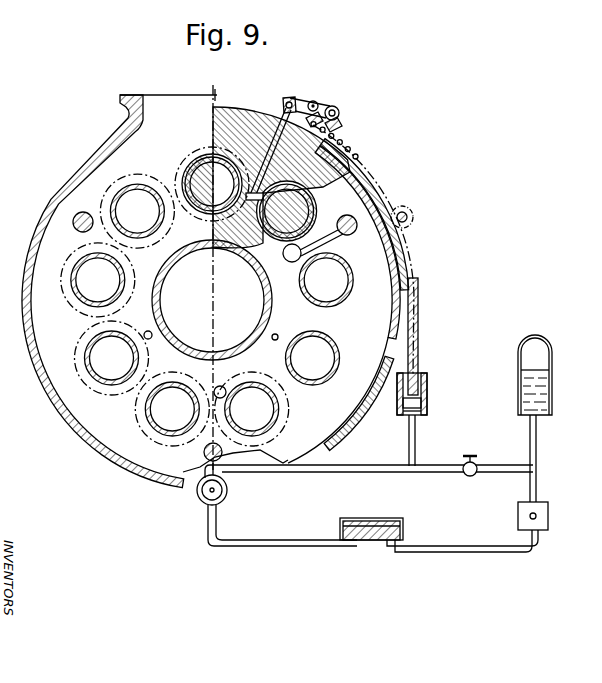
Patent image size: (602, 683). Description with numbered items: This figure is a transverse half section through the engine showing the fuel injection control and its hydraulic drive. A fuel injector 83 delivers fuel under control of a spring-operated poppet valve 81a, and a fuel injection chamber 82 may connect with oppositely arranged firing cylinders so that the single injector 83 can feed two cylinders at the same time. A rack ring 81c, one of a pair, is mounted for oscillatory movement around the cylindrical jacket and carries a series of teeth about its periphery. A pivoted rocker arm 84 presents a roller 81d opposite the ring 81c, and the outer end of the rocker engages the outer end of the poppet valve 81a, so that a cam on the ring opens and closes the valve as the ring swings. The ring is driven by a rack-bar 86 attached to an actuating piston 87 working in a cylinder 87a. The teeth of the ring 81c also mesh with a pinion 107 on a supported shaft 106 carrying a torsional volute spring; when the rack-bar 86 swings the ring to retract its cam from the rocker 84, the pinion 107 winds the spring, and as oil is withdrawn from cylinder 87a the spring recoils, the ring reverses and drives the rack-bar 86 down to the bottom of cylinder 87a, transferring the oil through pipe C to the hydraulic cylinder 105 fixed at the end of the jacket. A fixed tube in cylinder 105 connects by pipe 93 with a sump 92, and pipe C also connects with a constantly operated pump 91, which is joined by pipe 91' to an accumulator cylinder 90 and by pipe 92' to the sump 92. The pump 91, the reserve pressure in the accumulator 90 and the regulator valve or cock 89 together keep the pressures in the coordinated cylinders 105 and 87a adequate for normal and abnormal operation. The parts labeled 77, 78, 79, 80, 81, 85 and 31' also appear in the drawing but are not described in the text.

The housing 77 is at (155, 112).
The cylinder 78 is at (75, 272).
The cylinder 79 is at (113, 188).
The shaft 80 is at (207, 460).
The cam block 81 is at (228, 110).
The poppet valve 81a is at (286, 100).
The rack ring 81c is at (352, 430).
The roller 81d is at (339, 111).
The fuel injection chamber 82 is at (265, 200).
The injector 83 is at (281, 116).
The rocker arm 84 is at (317, 103).
The ball race 85 is at (338, 120).
The rack-bar 86 is at (412, 296).
The actuating piston 87 is at (427, 386).
The cylinder 87a is at (428, 403).
The regulator valve or cock 89 is at (479, 468).
The accumulator cylinder 90 is at (540, 389).
The pump 91 is at (547, 516).
The pipe 91' is at (551, 458).
The sump 92 is at (371, 542).
The pipe 92' is at (462, 552).
The pipe 93 is at (257, 546).
The cylinder 105 is at (197, 501).
The rod or shaft 106 is at (403, 212).
The pinion 107 is at (413, 220).
The central bore 31' is at (212, 300).
The pipe C is at (336, 473).